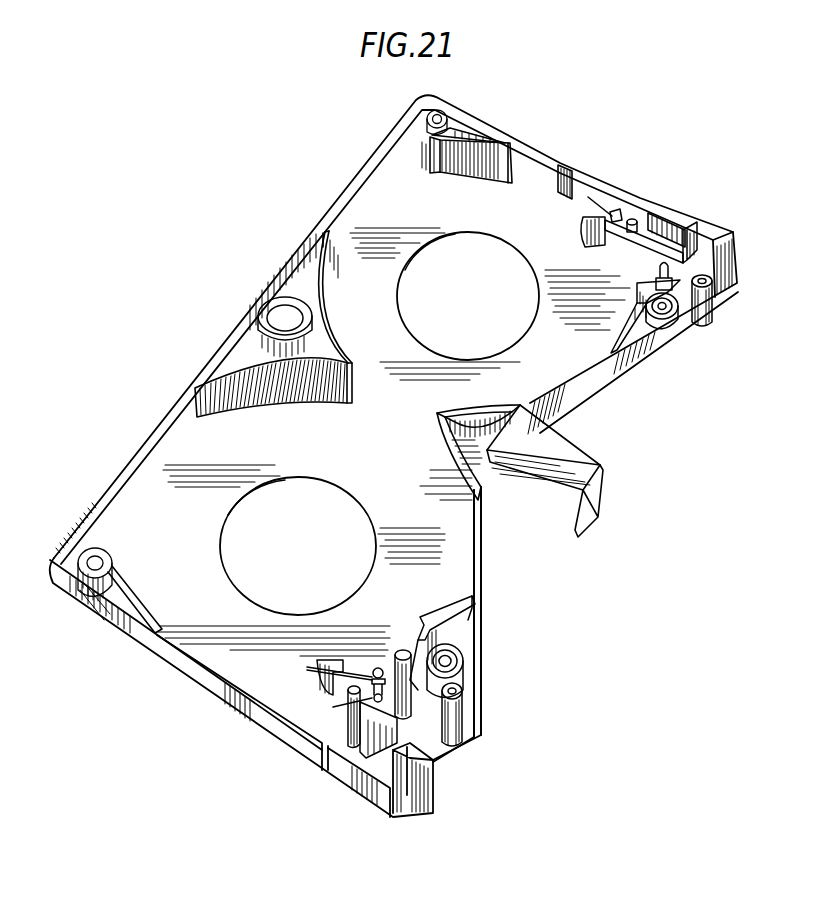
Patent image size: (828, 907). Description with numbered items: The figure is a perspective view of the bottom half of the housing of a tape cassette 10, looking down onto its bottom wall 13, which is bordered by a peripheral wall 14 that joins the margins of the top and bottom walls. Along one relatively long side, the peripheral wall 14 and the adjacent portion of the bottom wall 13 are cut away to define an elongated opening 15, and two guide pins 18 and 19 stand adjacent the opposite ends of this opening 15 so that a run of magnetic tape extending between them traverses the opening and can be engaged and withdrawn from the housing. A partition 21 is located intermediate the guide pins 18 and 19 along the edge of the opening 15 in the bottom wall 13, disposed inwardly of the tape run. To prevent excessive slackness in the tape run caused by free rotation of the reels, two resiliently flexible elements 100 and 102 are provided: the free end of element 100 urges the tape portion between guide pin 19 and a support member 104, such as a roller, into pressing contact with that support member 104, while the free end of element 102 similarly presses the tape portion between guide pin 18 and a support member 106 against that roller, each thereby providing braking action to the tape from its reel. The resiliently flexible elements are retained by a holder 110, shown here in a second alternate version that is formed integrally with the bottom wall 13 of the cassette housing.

The tape cassette 10 is at (96, 496).
The bottom wall 13 is at (382, 217).
The peripheral wall 14 is at (592, 180).
The opening 15 is at (533, 573).
The guide pin 18 is at (458, 724).
The guide pin 19 is at (707, 331).
The partition 21 is at (462, 462).
The resiliently flexible element 100 is at (652, 280).
The resiliently flexible element 102 is at (421, 648).
The support member 104 is at (665, 258).
The support member 106 is at (397, 653).
The holder 110 is at (634, 275).